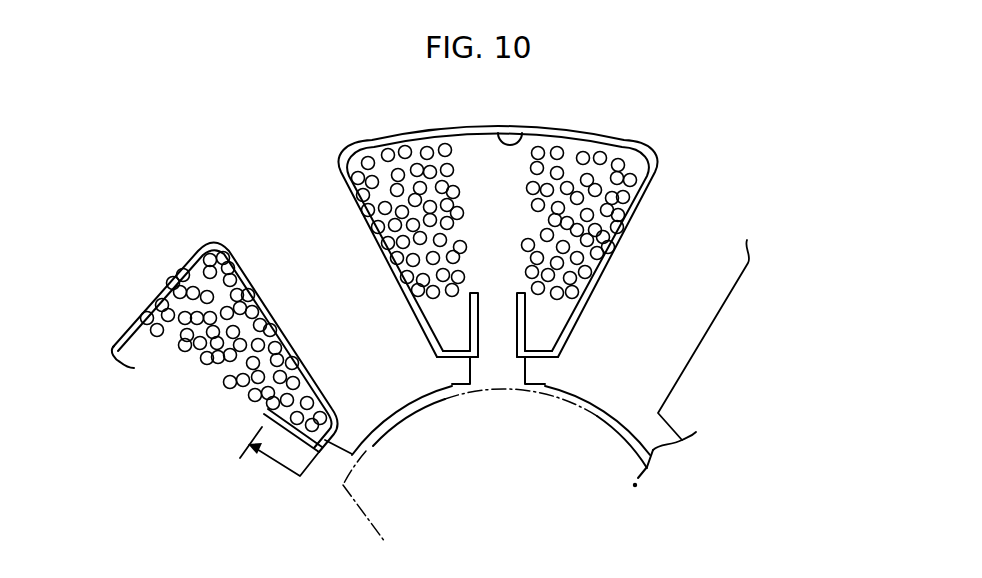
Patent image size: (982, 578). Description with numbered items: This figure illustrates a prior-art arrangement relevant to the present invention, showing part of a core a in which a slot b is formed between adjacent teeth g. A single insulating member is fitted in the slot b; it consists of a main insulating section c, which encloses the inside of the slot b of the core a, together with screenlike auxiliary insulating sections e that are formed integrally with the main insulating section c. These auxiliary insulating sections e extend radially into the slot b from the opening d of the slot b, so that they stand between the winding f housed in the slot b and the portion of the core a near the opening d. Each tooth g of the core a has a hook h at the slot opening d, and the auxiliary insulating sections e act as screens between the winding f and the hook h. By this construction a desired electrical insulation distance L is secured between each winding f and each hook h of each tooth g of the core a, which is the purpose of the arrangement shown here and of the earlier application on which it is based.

The core a is at (786, 267).
The slot b is at (525, 132).
The main insulating section c is at (458, 130).
The opening d is at (496, 337).
The auxiliary insulating sections e is at (513, 288).
The winding f is at (640, 197).
The tooth g is at (323, 223).
The hook h is at (458, 372).
The electrical insulation distance L is at (282, 463).